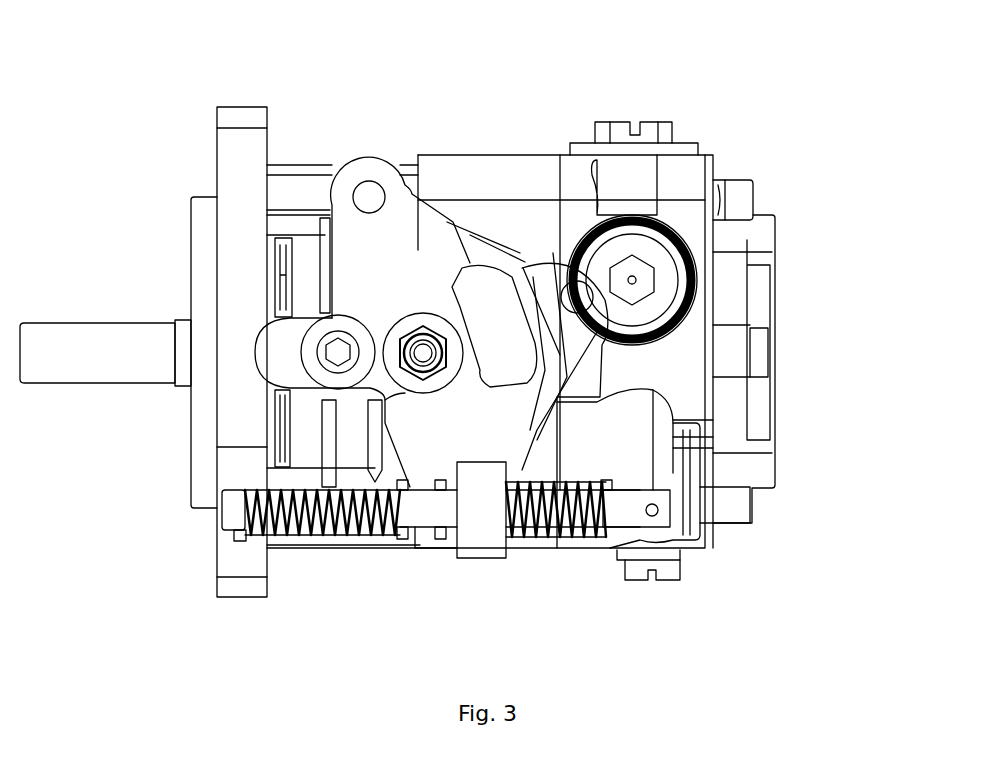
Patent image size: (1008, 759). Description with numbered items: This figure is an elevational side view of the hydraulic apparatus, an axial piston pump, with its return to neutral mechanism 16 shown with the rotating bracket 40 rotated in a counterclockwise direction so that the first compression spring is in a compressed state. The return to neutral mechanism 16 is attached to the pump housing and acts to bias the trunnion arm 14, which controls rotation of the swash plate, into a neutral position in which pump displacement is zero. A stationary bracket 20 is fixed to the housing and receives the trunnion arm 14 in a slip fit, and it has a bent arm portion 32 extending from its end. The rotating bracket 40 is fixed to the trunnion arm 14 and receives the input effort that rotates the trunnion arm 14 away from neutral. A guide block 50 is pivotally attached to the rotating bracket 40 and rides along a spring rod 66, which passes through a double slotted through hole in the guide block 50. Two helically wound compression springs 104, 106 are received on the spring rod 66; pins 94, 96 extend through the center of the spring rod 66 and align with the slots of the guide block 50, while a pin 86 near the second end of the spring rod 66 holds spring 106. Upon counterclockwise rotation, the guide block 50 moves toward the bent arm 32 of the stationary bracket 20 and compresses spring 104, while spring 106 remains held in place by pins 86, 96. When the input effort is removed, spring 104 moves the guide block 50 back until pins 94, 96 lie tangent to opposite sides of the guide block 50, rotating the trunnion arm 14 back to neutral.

The trunnion arm 14 is at (415, 330).
The return to neutral mechanism 16 is at (730, 313).
The stationary bracket 20 is at (687, 367).
The bent arm portion 32 is at (700, 482).
The rotating bracket 40 is at (365, 265).
The guide block 50 is at (481, 540).
The spring rod 66 is at (232, 511).
The pin 86 is at (235, 537).
The pin 94 is at (440, 540).
The pin 96 is at (402, 540).
The spring 104 is at (538, 535).
The spring 106 is at (315, 538).